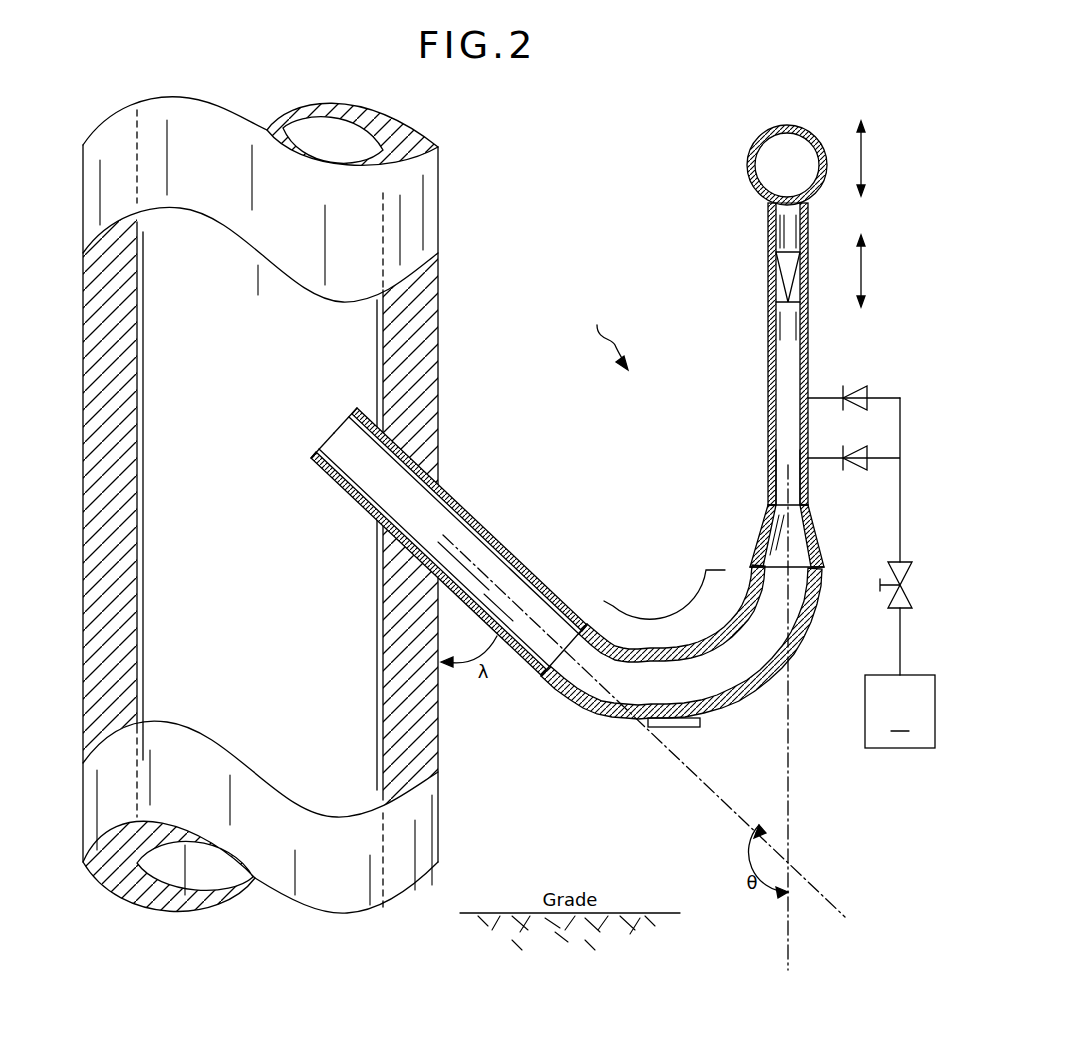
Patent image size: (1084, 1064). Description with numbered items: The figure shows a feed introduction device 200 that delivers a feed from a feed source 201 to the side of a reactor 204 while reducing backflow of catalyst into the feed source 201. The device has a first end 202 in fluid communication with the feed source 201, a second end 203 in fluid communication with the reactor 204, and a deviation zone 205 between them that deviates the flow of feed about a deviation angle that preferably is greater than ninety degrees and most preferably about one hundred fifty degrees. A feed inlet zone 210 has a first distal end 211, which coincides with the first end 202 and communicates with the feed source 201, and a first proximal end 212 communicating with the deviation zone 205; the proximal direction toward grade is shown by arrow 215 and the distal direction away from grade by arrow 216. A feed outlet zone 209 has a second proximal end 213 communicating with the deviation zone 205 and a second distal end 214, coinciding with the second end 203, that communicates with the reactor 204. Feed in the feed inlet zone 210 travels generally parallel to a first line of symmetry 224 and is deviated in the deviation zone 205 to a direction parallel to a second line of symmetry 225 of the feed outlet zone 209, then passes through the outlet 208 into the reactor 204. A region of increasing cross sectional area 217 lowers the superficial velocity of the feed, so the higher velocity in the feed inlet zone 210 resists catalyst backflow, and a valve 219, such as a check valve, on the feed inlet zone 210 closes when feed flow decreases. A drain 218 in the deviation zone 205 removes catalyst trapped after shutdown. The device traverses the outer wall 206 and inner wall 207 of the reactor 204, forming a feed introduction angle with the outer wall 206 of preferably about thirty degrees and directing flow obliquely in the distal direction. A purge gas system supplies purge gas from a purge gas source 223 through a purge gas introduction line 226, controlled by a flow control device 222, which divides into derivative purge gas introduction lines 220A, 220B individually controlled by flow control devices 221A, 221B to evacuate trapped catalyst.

The feed introduction device 200 is at (604, 334).
The feed source 201 is at (748, 160).
The first end 202 is at (708, 271).
The first distal end 211 is at (767, 216).
The second end 203 is at (269, 481).
The second distal end 214 is at (308, 465).
The reactor 204 is at (472, 281).
The deviation zone 205 is at (668, 613).
The outer wall 206 is at (440, 437).
The inner wall 207 is at (383, 375).
The outlet 208 is at (340, 426).
The feed outlet zone 209 is at (396, 541).
The feed inlet zone 210 is at (768, 390).
The first proximal end 212 is at (768, 485).
The second proximal end 213 is at (550, 673).
The proximal direction arrow 215 is at (862, 273).
The distal direction arrow 216 is at (862, 166).
The region of increasing cross sectional area 217 is at (759, 542).
The drain 218 is at (675, 728).
The valve 219 is at (784, 286).
The derivative purge gas introduction line 220A is at (822, 461).
The derivative purge gas introduction line 220B is at (825, 395).
The flow control device 221A is at (864, 466).
The flow control device 221B is at (864, 392).
The flow control device 222 is at (898, 598).
The purge gas source 223 is at (900, 711).
The first line of symmetry 224 is at (790, 818).
The second line of symmetry 225 is at (735, 796).
The purge gas introduction line 226 is at (900, 661).